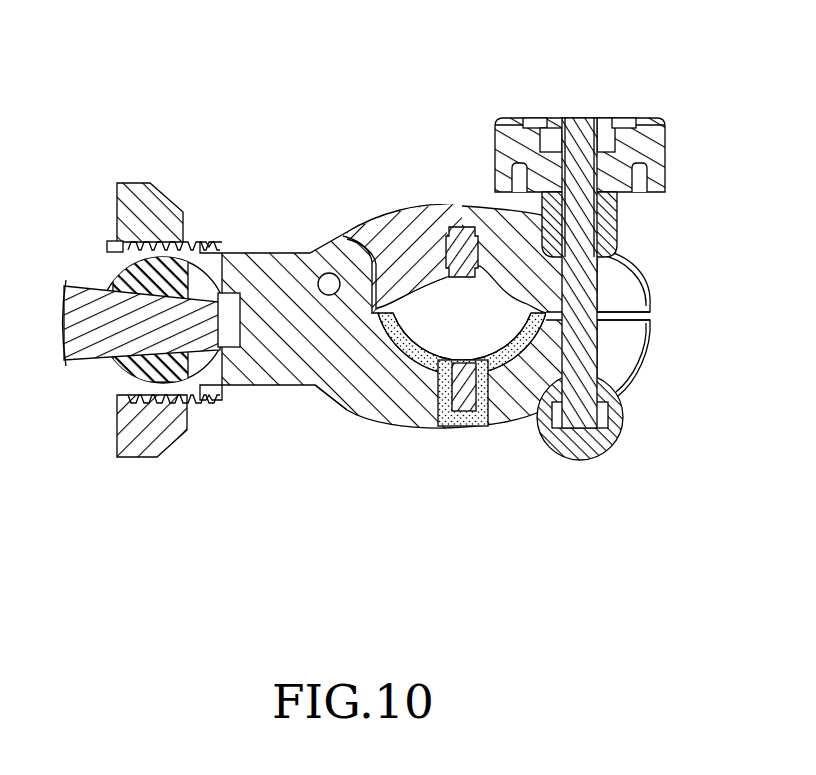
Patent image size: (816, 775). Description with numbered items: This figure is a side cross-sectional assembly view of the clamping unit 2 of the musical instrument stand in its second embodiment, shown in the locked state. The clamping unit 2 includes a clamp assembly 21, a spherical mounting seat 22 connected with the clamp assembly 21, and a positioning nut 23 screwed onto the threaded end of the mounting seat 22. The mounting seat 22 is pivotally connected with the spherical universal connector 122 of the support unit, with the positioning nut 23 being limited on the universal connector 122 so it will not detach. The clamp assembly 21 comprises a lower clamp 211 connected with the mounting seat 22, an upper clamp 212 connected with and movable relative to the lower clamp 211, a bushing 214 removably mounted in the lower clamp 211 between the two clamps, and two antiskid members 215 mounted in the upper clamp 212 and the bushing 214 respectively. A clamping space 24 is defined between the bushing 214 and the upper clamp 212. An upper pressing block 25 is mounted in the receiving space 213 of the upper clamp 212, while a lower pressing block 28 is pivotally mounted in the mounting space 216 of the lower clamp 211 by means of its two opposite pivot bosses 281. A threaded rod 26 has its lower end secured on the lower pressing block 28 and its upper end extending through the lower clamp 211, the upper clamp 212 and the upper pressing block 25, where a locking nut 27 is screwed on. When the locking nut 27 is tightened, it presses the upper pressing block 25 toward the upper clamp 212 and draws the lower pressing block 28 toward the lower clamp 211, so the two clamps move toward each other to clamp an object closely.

The clamping unit 2 is at (298, 90).
The clamp assembly 21 is at (245, 240).
The lower clamp 211 is at (331, 394).
The upper clamp 212 is at (387, 217).
The receiving space 213 is at (617, 268).
The bushing 214 is at (418, 360).
The antiskid members 215 is at (457, 213).
The mounting space 216 is at (608, 368).
The mounting seat 22 is at (193, 402).
The positioning nut 23 is at (140, 434).
The clamping space 24 is at (427, 333).
The upper pressing block 25 is at (610, 212).
The threaded rod 26 is at (583, 292).
The locking nut 27 is at (650, 140).
The lower pressing block 28 is at (624, 326).
The pivot bosses 281 is at (578, 420).
The universal connector 122 is at (93, 345).